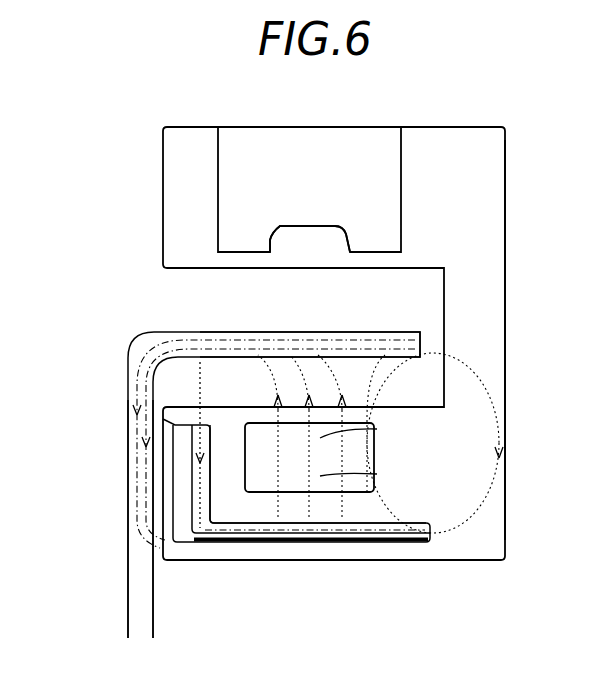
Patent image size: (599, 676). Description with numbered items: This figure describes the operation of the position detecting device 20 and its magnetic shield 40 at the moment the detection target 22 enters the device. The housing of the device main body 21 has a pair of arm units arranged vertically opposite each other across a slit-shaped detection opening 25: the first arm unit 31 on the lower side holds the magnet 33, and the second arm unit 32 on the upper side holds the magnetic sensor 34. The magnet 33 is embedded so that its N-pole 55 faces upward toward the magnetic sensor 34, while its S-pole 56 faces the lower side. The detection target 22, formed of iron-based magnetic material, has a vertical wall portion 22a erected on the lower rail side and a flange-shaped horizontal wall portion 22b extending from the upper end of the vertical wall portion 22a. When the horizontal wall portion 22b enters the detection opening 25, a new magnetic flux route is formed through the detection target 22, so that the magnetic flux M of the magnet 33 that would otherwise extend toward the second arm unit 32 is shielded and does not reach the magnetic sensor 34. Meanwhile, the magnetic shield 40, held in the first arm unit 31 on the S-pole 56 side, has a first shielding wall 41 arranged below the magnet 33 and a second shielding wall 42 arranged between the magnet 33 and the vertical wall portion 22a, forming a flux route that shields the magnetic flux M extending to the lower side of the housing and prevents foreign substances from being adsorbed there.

The position detecting device 20 is at (66, 130).
The device main body 21 is at (458, 127).
The second arm unit 32 is at (193, 134).
The magnetic sensor 34 is at (346, 227).
The first arm unit 31 is at (233, 563).
The detection target 22 is at (143, 340).
The vertical wall portion 22a is at (152, 517).
The horizontal wall portion 22b is at (380, 343).
The detection opening 25 is at (243, 313).
The magnetic shield 40 is at (170, 546).
The second shielding wall 42 is at (205, 480).
The first shielding wall 41 is at (317, 542).
The magnet 33 is at (377, 452).
The N-pole 55 is at (377, 429).
The S-pole 56 is at (377, 474).
The magnetic flux M is at (312, 352).